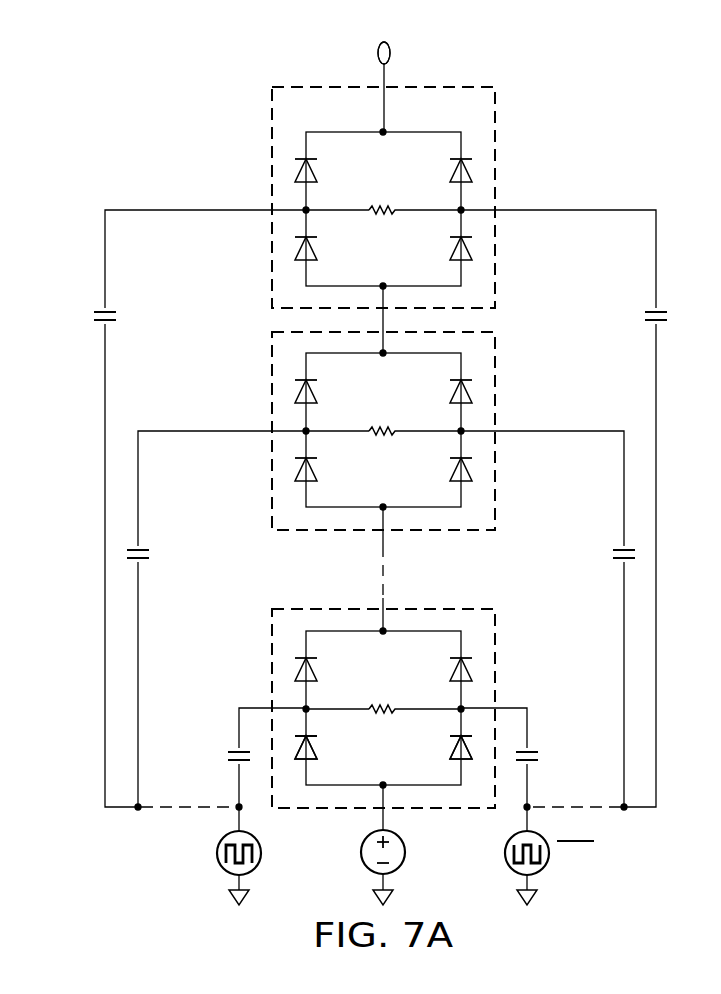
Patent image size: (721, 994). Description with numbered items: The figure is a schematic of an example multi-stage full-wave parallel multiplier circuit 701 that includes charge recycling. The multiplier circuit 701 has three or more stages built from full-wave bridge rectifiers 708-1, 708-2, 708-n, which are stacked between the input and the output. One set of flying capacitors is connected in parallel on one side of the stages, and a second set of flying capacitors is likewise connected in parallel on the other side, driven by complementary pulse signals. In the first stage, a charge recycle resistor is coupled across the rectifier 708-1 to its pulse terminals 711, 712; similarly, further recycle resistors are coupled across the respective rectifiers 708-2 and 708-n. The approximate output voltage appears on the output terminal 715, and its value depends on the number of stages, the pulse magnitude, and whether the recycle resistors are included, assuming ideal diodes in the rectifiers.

The multi-stage full-wave parallel multiplier circuit 701 is at (388, 466).
The full-wave bridge rectifier 708-n is at (267, 140).
The full-wave bridge rectifier 708-2 is at (267, 383).
The full-wave bridge rectifier 708-1 is at (267, 665).
The pulse terminal 711 is at (310, 713).
The pulse terminal 712 is at (456, 713).
The output terminal 715 is at (391, 51).